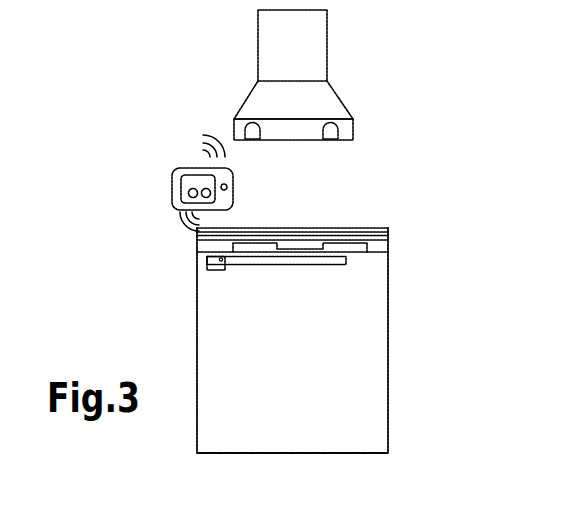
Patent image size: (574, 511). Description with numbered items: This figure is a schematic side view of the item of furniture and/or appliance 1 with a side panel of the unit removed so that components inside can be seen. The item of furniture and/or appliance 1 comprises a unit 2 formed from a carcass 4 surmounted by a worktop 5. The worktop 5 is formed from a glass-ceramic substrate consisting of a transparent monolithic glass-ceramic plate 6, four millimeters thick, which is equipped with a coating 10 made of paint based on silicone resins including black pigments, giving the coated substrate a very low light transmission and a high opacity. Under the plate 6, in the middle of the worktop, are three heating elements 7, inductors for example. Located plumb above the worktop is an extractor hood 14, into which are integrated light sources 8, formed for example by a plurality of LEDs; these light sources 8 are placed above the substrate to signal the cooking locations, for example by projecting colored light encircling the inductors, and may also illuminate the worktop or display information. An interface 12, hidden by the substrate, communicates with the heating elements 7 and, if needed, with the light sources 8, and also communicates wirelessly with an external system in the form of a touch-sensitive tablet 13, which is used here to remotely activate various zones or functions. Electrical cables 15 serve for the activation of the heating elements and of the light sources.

The item of furniture and/or appliance 1 is at (158, 104).
The unit 2 is at (389, 303).
The carcass 4 is at (373, 399).
The worktop 5 is at (352, 228).
The glass-ceramic plate 6 is at (388, 228).
The heating elements 7 is at (328, 248).
The light sources 8 is at (252, 126).
The coating 10 is at (197, 240).
The interface 12 is at (207, 263).
The touch-sensitive tablet 13 is at (173, 180).
The extractor hood 14 is at (313, 42).
The electrical cables 15 is at (311, 265).